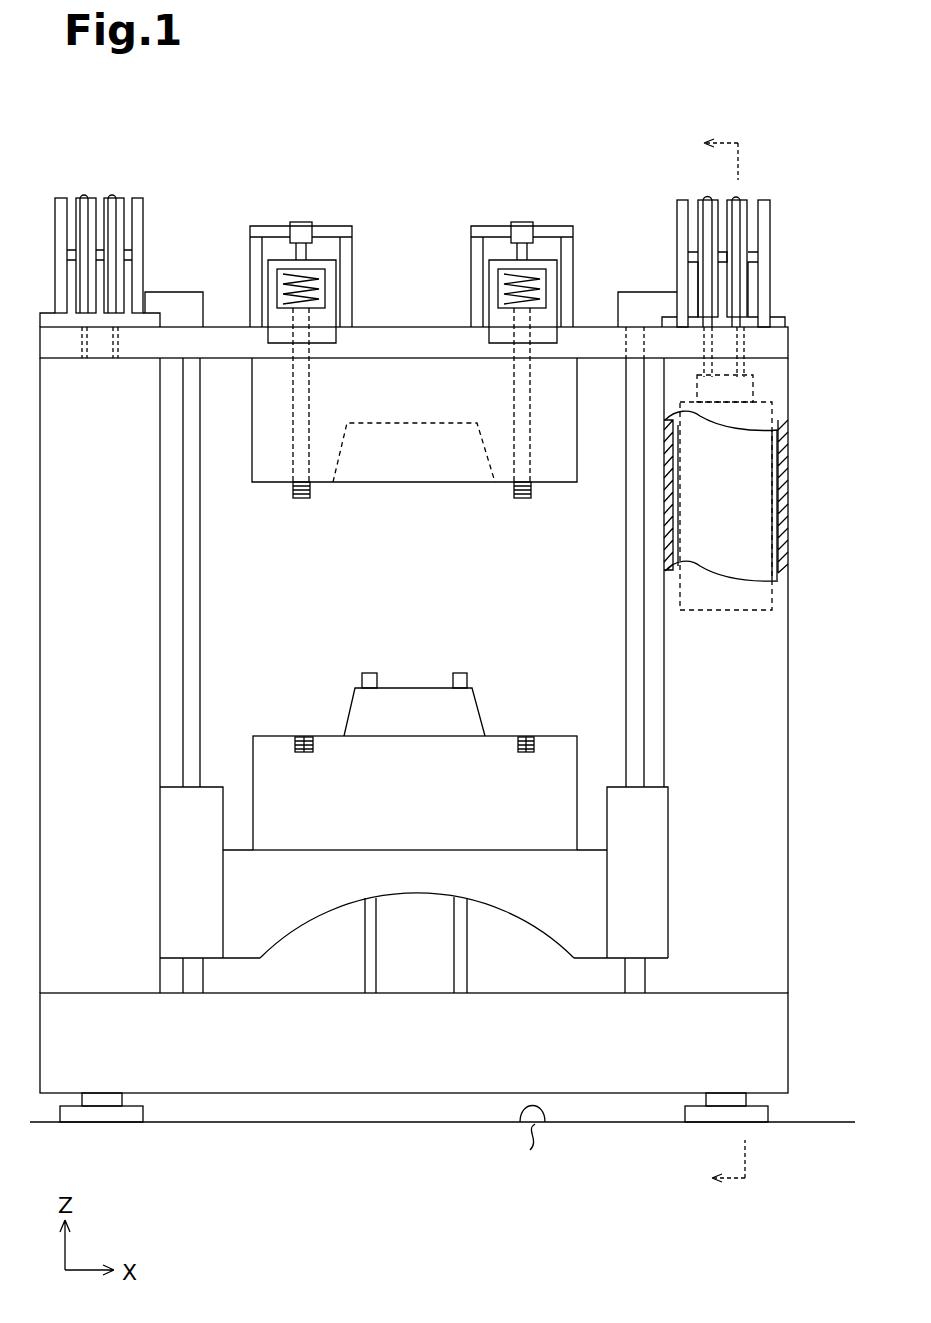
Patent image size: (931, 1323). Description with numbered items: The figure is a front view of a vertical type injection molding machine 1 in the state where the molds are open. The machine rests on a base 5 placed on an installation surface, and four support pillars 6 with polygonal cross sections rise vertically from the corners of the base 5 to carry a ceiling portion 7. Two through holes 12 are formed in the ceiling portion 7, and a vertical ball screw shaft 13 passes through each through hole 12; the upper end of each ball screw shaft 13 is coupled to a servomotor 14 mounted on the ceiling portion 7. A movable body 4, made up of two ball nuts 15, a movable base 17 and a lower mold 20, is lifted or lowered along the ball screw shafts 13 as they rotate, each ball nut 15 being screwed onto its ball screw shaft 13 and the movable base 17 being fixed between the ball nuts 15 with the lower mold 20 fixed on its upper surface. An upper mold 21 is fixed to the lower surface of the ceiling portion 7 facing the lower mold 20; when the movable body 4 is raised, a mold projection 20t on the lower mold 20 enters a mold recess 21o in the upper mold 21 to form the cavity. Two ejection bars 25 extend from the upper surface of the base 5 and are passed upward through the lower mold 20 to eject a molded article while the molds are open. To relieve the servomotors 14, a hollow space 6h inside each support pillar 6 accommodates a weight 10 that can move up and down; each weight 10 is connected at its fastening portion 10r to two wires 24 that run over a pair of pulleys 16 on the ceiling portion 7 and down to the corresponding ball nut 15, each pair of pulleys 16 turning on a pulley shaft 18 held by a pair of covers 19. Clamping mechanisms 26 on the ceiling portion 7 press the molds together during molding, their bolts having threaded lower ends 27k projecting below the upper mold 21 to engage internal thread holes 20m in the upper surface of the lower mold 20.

The vertical type injection molding machine 1 is at (779, 138).
The movable body 4 is at (275, 724).
The base 5 is at (780, 1043).
The support pillar 6 is at (780, 842).
The hollow space 6h is at (768, 483).
The ceiling portion 7 is at (778, 342).
The weight 10 is at (760, 553).
The fastening portion of the weight 10r is at (755, 388).
The through hole 12 is at (633, 342).
The ball screw shaft 13 is at (628, 600).
The servomotor 14 is at (650, 292).
The ball nut 15 is at (613, 790).
The pulley 16 is at (734, 198).
The movable base 17 is at (415, 885).
The pulley shaft 18 is at (694, 260).
The cover 19 is at (688, 201).
The lower mold 20 is at (256, 750).
The internal thread hole 20m is at (305, 737).
The mold projection 20t is at (428, 690).
The upper mold 21 is at (258, 473).
The mold recess 21o is at (343, 465).
The wire 24 is at (745, 322).
The ejection bar 25 is at (466, 957).
The clamping mechanism 26 is at (344, 210).
The lower end of the bolt shank 27k is at (293, 490).